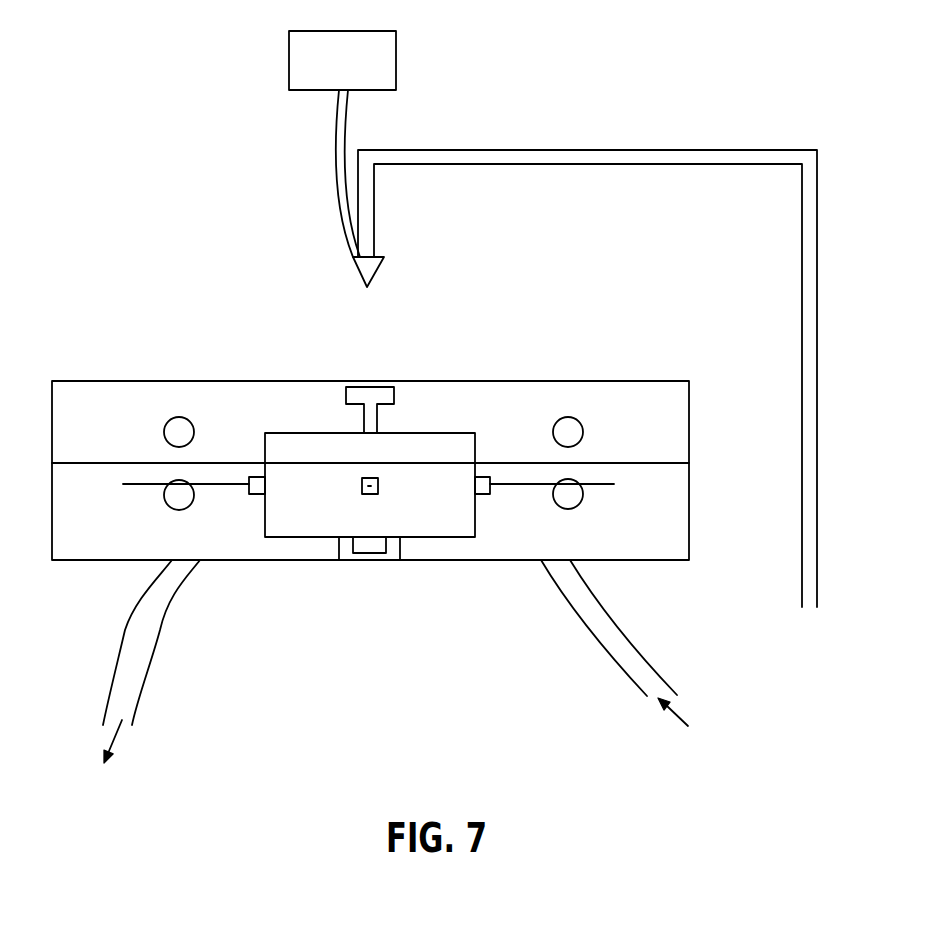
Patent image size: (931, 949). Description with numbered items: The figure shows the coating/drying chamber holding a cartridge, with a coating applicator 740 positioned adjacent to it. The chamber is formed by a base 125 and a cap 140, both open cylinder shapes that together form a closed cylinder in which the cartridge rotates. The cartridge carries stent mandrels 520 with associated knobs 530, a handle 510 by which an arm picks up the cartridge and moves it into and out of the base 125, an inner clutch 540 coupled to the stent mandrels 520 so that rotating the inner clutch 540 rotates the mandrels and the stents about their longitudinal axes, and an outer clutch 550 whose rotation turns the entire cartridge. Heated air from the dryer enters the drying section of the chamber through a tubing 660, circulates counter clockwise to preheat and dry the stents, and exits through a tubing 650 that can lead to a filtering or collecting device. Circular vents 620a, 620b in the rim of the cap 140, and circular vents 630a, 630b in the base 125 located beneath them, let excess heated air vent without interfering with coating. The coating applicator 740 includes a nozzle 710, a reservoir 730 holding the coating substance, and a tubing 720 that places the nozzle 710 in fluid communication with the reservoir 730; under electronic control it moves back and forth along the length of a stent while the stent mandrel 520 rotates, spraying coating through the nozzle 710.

The reservoir 730 is at (402, 63).
The tubing 720 is at (335, 170).
The nozzle 710 is at (353, 270).
The coating applicator 740 is at (612, 150).
The cap 140 is at (630, 381).
The base 125 is at (690, 490).
The circular vent 620a is at (177, 417).
The circular vent 620b is at (566, 417).
The circular vent 630a is at (172, 509).
The circular vent 630b is at (575, 508).
The stent mandrel 520 is at (151, 485).
The knob 530 is at (254, 496).
The handle 510 is at (394, 397).
The inner clutch 540 is at (360, 553).
The outer clutch 550 is at (400, 540).
The tubing 650 is at (148, 667).
The tubing 660 is at (622, 622).